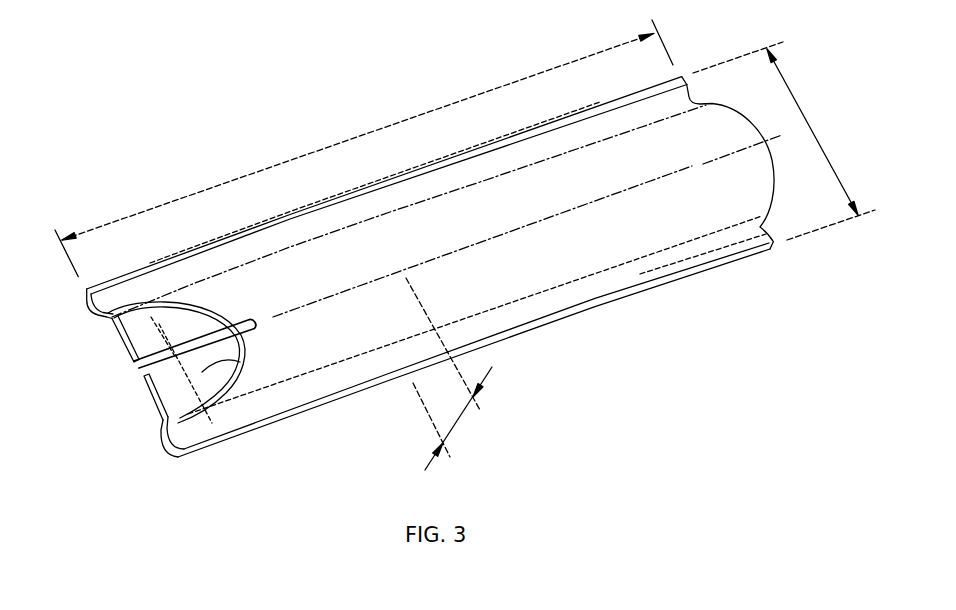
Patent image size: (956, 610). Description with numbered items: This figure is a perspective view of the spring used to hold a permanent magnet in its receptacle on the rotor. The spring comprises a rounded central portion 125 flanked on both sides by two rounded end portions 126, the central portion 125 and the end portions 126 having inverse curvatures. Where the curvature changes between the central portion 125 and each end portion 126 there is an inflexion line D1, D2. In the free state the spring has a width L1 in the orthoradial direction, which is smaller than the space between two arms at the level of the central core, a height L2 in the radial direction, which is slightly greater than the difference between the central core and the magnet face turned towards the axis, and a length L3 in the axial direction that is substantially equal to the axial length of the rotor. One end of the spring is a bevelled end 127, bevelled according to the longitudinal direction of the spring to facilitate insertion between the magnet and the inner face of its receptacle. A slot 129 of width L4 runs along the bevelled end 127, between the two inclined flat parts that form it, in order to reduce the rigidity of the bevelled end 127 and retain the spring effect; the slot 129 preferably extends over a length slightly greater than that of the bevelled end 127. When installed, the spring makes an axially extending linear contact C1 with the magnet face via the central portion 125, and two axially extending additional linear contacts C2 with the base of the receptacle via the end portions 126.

The rounded central portion 125 is at (705, 173).
The rounded end portions 126 is at (321, 204).
The bevelled end 127 is at (136, 333).
The slot 129 is at (137, 376).
The width L1 is at (815, 138).
The height L2 is at (458, 418).
The length L3 is at (357, 136).
The width of the slot L4 is at (210, 428).
The inflexion line D1 is at (473, 186).
The inflexion line D2 is at (673, 247).
The linear contact C1 is at (527, 222).
The additional linear contacts C2 is at (84, 310).